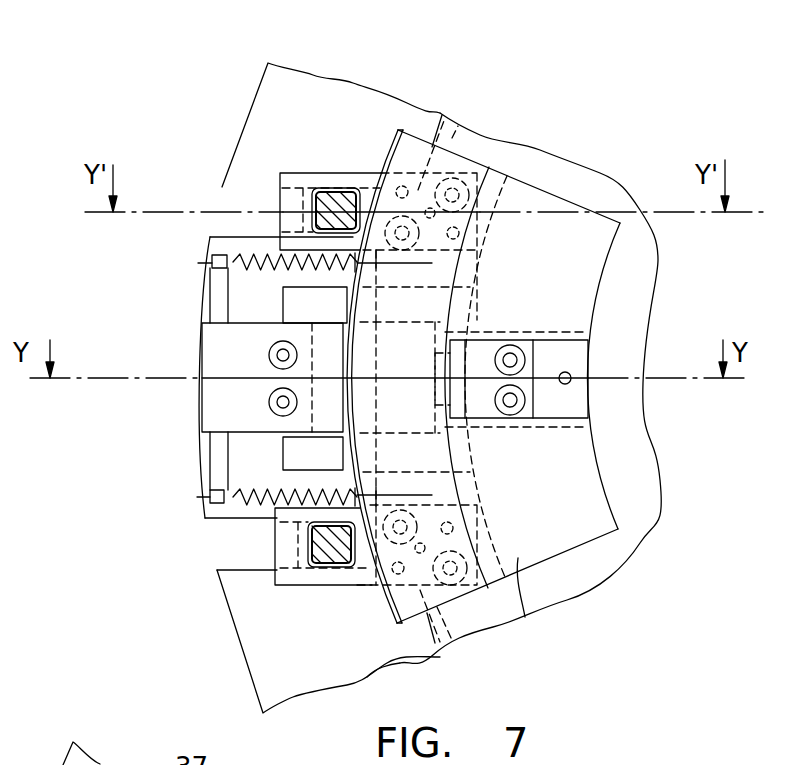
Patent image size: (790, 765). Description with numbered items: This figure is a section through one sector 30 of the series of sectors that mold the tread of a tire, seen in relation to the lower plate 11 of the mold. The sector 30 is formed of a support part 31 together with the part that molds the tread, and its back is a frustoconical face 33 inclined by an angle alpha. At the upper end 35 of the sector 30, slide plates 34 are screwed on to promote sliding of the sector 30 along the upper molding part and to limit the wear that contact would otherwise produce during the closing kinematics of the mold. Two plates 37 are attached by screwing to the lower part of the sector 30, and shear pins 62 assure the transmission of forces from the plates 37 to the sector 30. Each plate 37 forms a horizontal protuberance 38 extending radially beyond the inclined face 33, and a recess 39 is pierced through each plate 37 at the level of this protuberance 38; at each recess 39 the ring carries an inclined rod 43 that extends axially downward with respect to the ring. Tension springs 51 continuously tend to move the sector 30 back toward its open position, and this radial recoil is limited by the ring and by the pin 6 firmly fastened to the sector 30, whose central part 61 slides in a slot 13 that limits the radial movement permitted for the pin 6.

The pin 6 is at (400, 453).
The lower plate 11 is at (335, 643).
The slot 13 is at (323, 407).
The sector 30 is at (537, 200).
The support part 31 is at (548, 550).
The frustoconical face 33 is at (395, 622).
The slide plate 34 is at (573, 362).
The upper end 35 is at (525, 617).
The plate 37 is at (352, 182).
The horizontal protuberance 38 is at (287, 221).
The recess 39 is at (313, 188).
The inclined rod 43 is at (328, 203).
The tension spring 51 is at (257, 500).
The central part 61 is at (372, 357).
The shear pin 62 is at (460, 128).